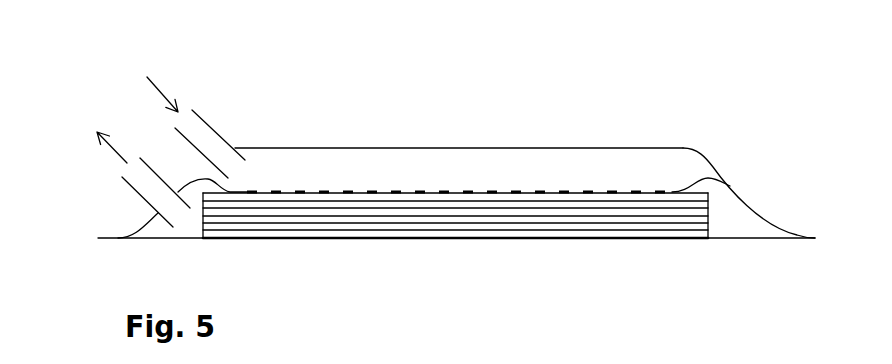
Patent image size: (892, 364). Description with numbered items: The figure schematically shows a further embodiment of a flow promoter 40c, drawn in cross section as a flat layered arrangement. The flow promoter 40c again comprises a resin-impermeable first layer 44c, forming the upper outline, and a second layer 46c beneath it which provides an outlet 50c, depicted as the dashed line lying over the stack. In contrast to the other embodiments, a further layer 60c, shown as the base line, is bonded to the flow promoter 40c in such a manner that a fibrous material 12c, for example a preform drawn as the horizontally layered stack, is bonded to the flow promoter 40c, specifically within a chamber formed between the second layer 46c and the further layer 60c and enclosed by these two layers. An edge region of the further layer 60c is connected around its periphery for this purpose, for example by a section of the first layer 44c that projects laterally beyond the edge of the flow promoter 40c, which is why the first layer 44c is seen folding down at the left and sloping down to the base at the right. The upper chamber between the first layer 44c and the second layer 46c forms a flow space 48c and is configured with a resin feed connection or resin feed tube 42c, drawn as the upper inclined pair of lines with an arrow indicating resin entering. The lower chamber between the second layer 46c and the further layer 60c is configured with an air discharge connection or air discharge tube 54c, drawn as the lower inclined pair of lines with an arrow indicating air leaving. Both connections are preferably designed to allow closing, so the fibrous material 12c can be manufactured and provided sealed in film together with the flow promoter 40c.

The fibrous material 12c is at (518, 210).
The flow promoter 40c is at (369, 130).
The resin feed connection and/or resin feed tube 42c is at (205, 122).
The first layer 44c is at (298, 148).
The second layer 46c is at (352, 193).
The flow space 48c is at (460, 158).
The outlet 50c is at (520, 179).
The air discharge connection and/or air discharge tube 54c is at (132, 187).
The further layer 60c is at (168, 238).